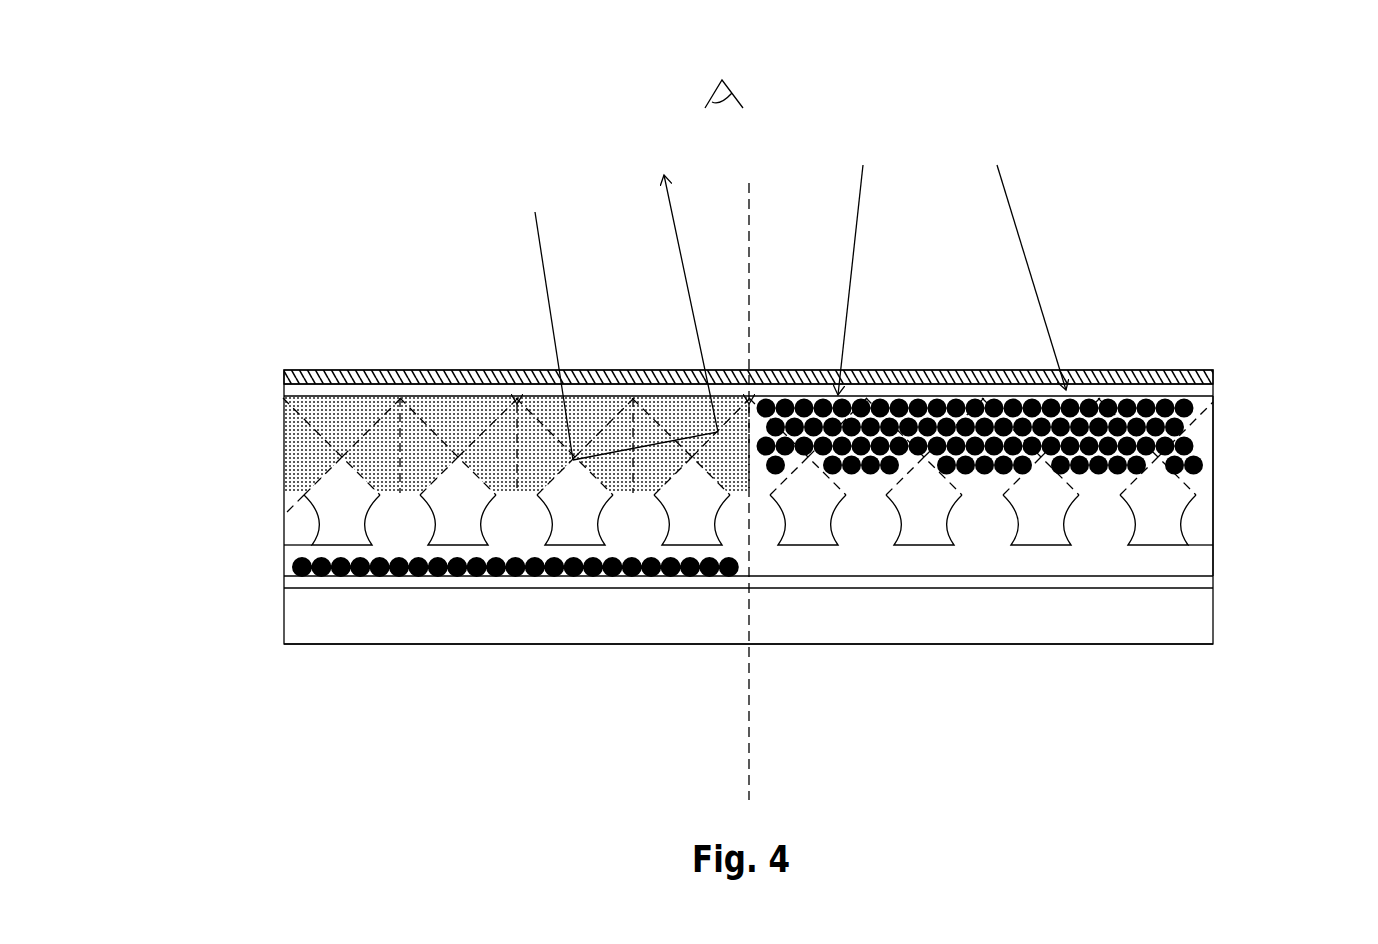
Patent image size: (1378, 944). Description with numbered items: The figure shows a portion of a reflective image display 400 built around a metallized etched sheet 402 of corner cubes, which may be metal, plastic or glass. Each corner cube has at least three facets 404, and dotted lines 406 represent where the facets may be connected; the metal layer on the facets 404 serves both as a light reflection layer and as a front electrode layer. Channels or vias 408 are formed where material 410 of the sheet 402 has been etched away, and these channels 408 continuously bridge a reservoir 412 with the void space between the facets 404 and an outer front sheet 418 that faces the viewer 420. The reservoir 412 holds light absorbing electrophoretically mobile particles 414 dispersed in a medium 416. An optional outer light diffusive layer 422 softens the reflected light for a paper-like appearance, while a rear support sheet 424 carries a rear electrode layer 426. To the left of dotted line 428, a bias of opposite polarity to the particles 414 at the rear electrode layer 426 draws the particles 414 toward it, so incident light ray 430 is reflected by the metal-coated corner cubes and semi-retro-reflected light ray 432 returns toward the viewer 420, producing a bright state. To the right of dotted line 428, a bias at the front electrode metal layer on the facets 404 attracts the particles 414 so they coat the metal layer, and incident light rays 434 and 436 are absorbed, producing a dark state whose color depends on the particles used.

The display 400 is at (1130, 333).
The metallized etched sheet 402 is at (1233, 400).
The facets 404 is at (428, 432).
The dotted lines 406 is at (313, 432).
The channels or vias 408 is at (410, 540).
The material of sheet 410 is at (330, 525).
The reservoir 412 is at (1233, 545).
The light absorbing electrophoretically mobile particles 414 is at (290, 568).
The medium 416 is at (1190, 562).
The outer front sheet 418 is at (1215, 392).
The viewer 420 is at (733, 92).
The outer light diffusive layer 422 is at (313, 370).
The rear support sheet 424 is at (402, 635).
The rear electrode layer 426 is at (732, 590).
The dotted line 428 is at (750, 283).
The incident light ray 430 is at (547, 297).
The light ray 432 is at (688, 297).
The incident light ray 434 is at (858, 235).
The incident light ray 436 is at (1022, 238).